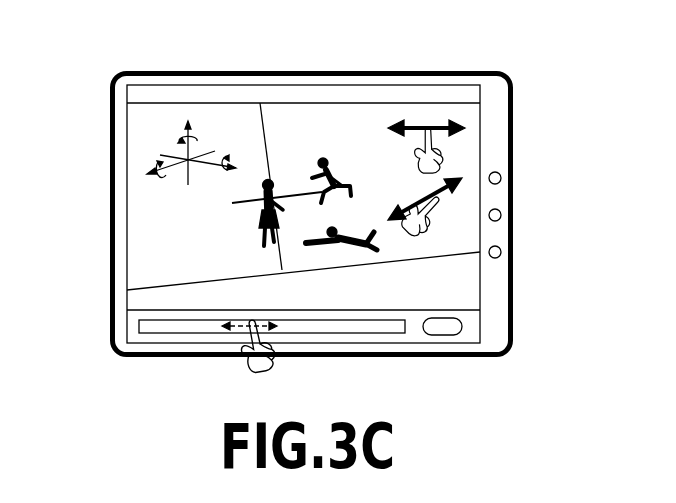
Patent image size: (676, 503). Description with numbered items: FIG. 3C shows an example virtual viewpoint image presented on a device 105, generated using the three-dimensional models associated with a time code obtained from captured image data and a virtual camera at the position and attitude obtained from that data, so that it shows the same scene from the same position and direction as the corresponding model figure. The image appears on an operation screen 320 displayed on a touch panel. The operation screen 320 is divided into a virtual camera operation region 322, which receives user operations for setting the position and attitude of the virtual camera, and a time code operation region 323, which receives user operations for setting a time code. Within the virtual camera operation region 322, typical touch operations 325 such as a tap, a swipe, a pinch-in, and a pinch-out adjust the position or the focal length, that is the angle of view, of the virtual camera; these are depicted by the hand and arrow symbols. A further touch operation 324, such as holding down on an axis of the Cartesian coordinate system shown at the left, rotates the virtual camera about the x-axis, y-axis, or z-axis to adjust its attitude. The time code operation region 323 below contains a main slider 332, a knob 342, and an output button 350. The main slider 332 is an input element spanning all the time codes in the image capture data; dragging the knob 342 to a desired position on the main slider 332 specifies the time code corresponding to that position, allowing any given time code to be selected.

The electronic device 105 is at (283, 73).
The operation screen 320 is at (173, 85).
The virtual camera operation region 322 is at (101, 73).
The time code operation region 323 is at (101, 311).
The touch operation 324 is at (200, 197).
The touch operations 325 is at (421, 202).
The main slider 332 is at (162, 327).
The knob 342 is at (260, 343).
The output button 350 is at (440, 334).